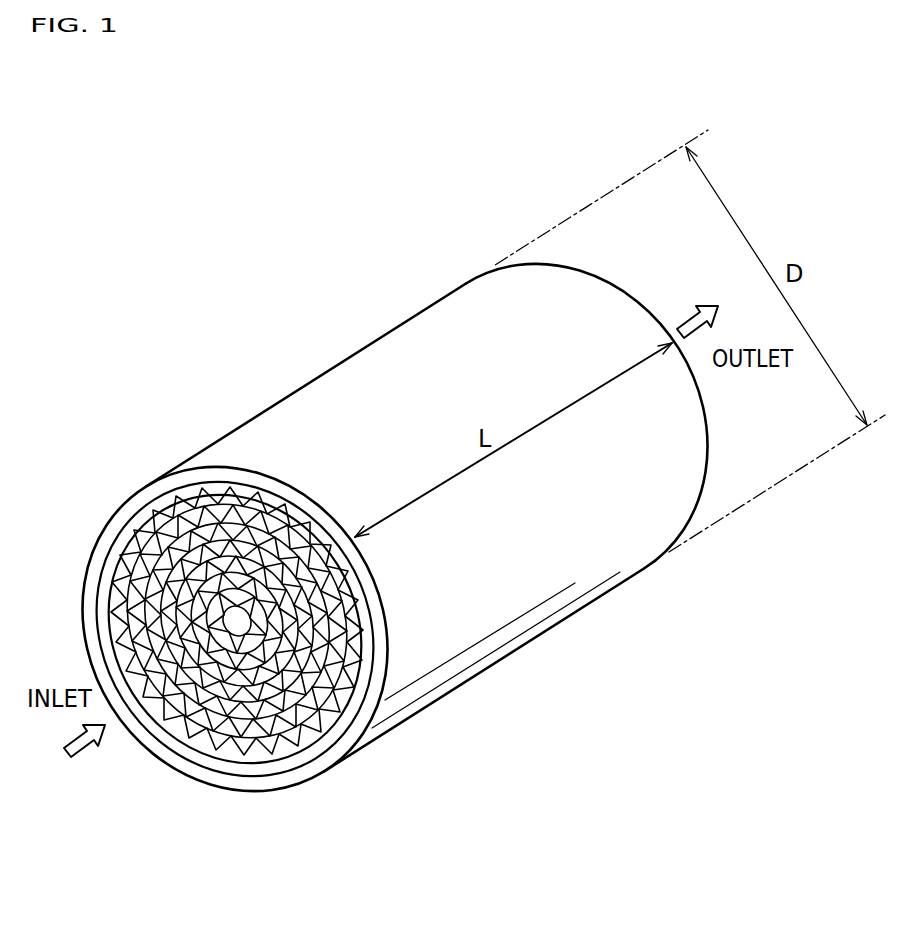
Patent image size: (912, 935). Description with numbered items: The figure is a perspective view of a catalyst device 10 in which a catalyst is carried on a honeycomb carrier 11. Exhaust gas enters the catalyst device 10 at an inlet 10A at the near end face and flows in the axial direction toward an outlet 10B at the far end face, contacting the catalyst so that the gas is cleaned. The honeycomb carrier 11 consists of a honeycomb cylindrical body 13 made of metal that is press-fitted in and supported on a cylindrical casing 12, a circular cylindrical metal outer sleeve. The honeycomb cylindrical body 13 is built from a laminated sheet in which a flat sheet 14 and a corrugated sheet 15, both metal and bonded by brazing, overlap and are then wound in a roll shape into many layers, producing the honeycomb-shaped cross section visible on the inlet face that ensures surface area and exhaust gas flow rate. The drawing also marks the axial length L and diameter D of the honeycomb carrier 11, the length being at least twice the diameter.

The catalyst device 10 is at (364, 563).
The inlet 10A is at (155, 755).
The outlet 10B is at (640, 298).
The honeycomb carrier 11 is at (170, 445).
The cylindrical casing 12 is at (247, 422).
The honeycomb cylindrical body 13 is at (237, 685).
The flat sheet 14 is at (228, 767).
The corrugated sheet 15 is at (250, 763).